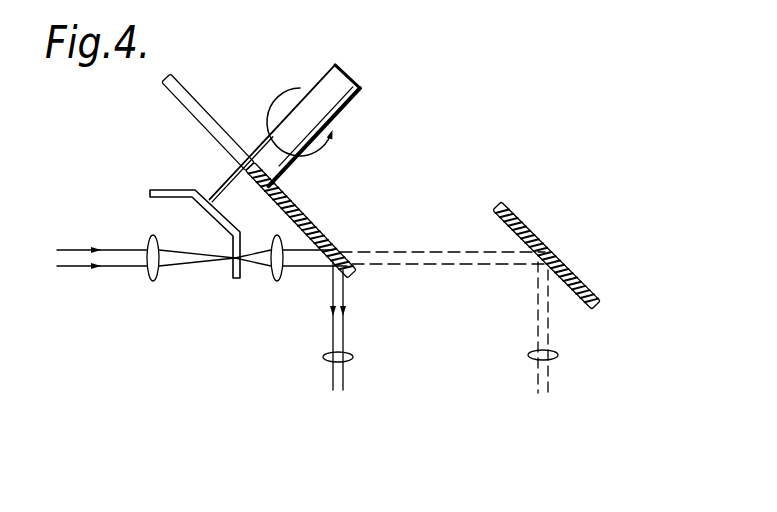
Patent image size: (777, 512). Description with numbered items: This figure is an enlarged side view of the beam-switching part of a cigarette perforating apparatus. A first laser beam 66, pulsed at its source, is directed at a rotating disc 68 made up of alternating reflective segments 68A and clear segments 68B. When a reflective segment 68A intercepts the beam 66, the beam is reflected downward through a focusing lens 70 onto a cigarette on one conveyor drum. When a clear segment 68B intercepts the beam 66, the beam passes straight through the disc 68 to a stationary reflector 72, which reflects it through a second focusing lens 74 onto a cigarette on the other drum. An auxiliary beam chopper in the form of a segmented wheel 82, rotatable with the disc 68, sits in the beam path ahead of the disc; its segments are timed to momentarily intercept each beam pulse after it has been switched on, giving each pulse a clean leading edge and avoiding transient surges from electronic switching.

The first laser beam 66 is at (108, 268).
The rotating disc 68 is at (241, 108).
The reflective segments 68A is at (326, 237).
The clear segments 68B is at (185, 107).
The focusing lens 70 is at (355, 350).
The stationary reflector 72 is at (531, 236).
The focusing lens 74 is at (557, 357).
The segmented wheel 82 is at (167, 190).